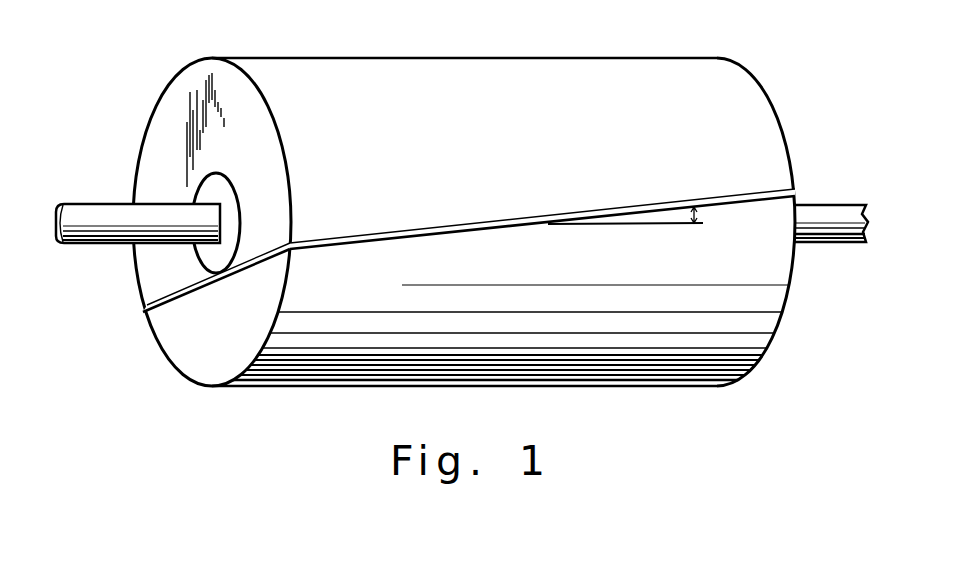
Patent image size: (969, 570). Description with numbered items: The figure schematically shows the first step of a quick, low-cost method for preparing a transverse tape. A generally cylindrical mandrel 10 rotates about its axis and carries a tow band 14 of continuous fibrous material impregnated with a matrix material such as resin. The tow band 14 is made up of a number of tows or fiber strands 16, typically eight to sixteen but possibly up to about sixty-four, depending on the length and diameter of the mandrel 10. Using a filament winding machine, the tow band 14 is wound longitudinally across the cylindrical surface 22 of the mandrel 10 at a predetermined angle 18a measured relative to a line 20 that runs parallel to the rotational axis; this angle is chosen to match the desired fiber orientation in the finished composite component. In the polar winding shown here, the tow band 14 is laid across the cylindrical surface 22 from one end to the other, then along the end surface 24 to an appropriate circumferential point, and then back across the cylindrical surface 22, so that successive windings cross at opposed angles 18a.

The mandrel 10 is at (767, 94).
The tow band 14 is at (350, 248).
The fiber strands 16 is at (382, 238).
The angle 18a is at (696, 217).
The line 20 is at (633, 226).
The cylindrical surface 22 is at (276, 72).
The end surface 24 is at (158, 134).